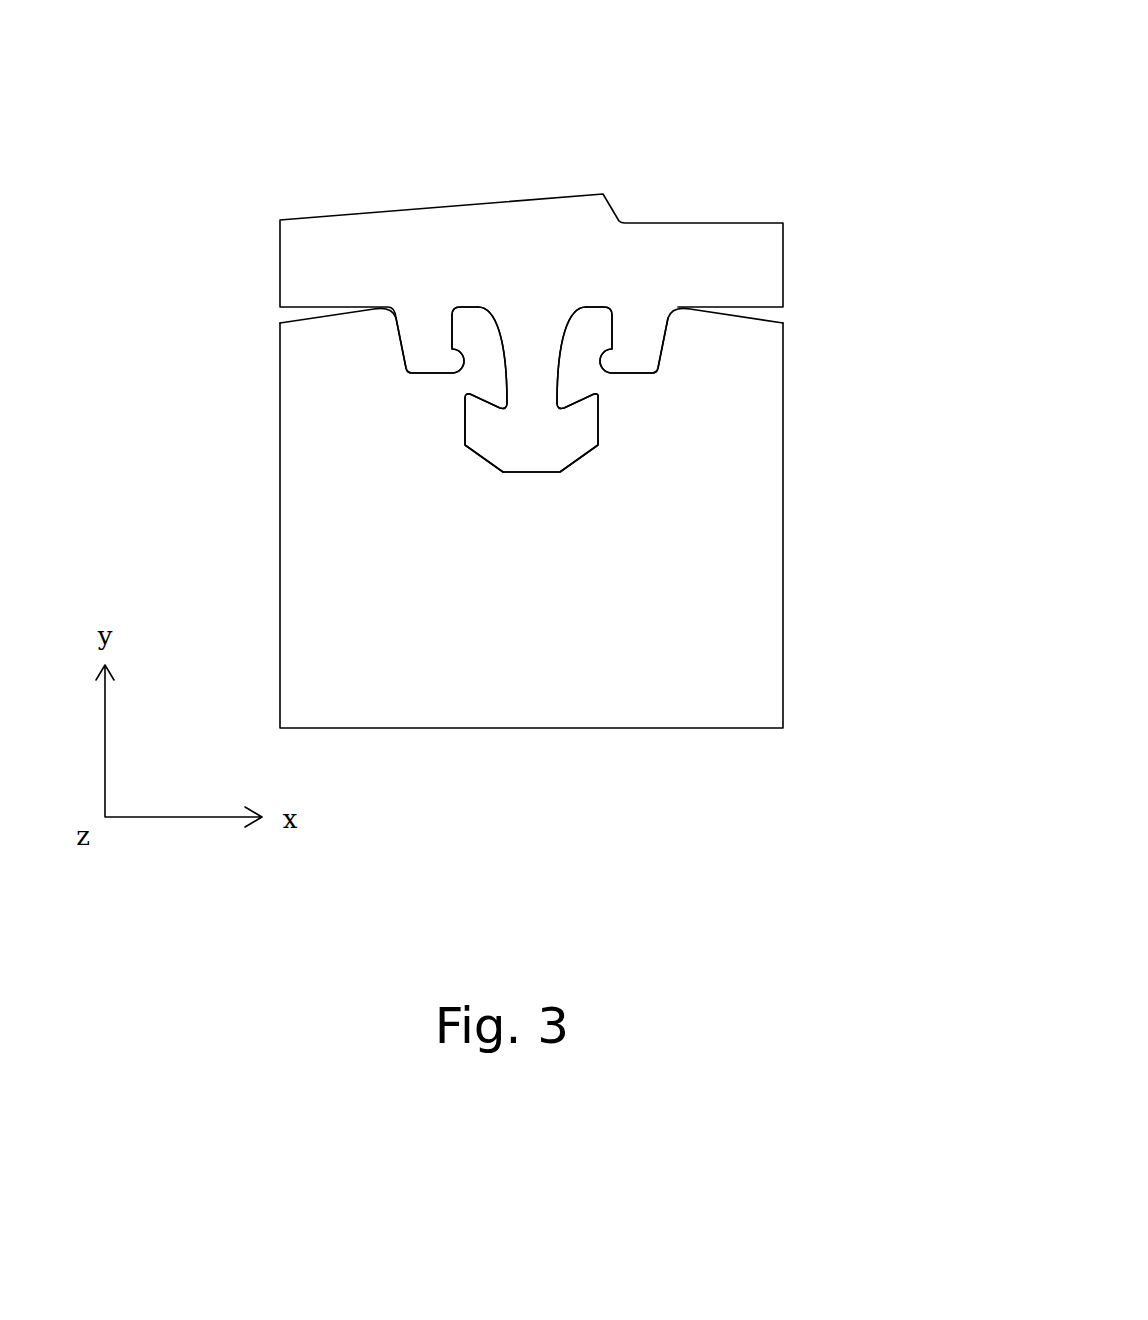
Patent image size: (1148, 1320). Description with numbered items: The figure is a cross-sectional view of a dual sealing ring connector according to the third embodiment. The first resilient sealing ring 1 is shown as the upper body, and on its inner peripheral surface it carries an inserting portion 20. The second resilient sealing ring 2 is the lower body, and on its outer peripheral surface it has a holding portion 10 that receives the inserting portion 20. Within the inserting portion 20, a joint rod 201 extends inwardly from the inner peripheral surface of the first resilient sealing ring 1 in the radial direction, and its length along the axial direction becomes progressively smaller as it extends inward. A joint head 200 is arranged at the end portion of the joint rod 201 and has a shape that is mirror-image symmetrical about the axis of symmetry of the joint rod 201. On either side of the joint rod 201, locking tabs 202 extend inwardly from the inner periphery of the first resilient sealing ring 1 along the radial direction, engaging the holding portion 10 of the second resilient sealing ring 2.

The first resilient sealing ring 1 is at (489, 262).
The second resilient sealing ring 2 is at (622, 695).
The holding portion 10 is at (438, 397).
The inserting portion 20 is at (638, 343).
The joint head 200 is at (530, 433).
The joint rod 201 is at (535, 365).
The locking tabs 202 is at (423, 345).